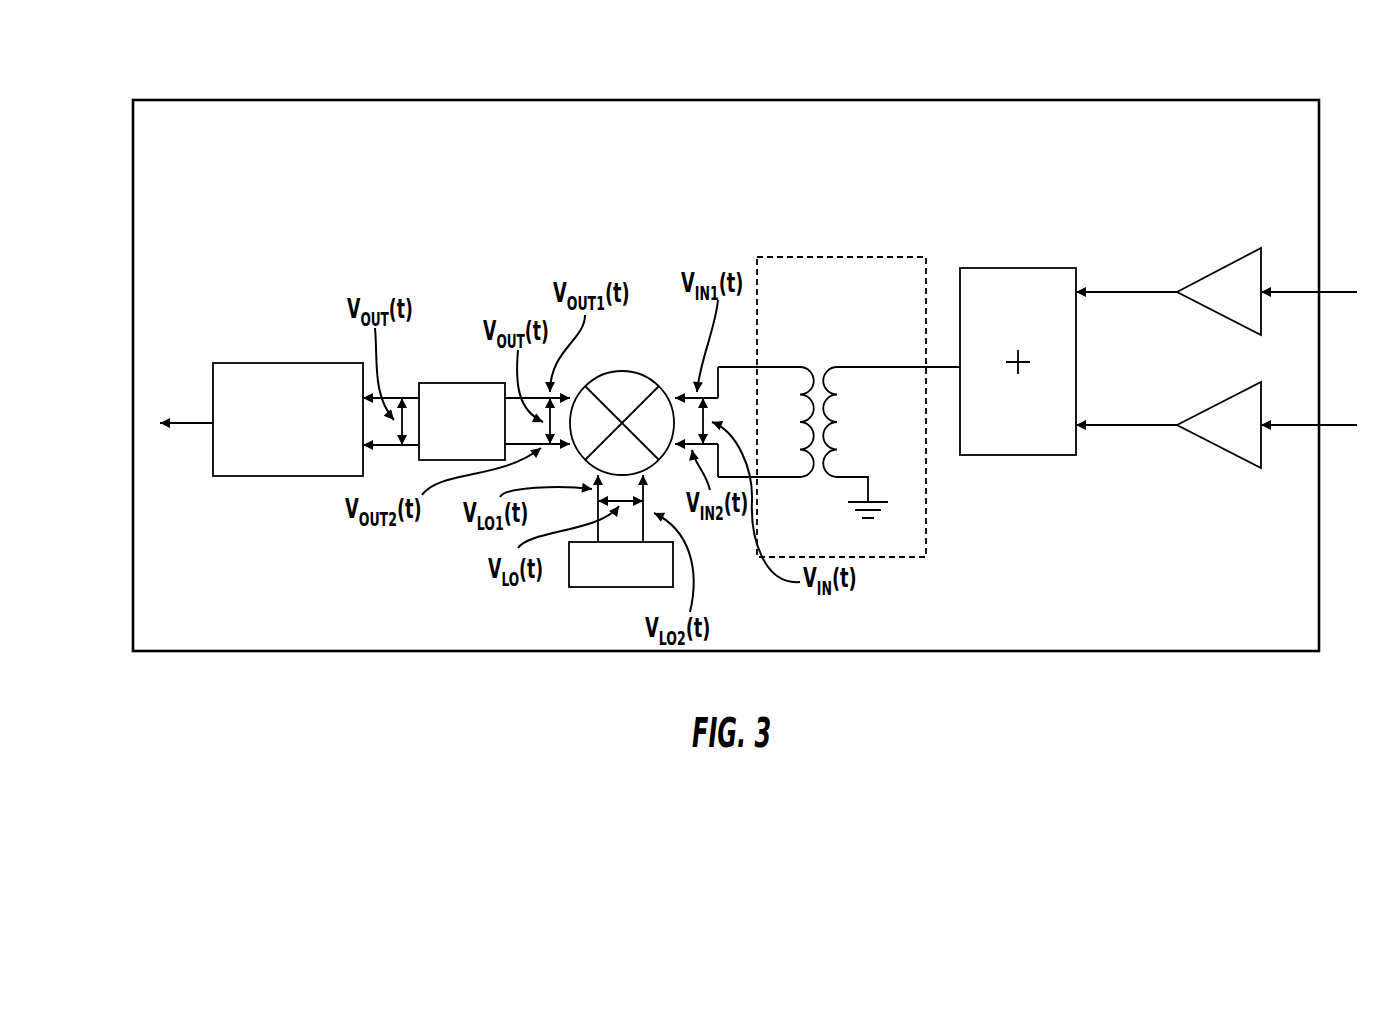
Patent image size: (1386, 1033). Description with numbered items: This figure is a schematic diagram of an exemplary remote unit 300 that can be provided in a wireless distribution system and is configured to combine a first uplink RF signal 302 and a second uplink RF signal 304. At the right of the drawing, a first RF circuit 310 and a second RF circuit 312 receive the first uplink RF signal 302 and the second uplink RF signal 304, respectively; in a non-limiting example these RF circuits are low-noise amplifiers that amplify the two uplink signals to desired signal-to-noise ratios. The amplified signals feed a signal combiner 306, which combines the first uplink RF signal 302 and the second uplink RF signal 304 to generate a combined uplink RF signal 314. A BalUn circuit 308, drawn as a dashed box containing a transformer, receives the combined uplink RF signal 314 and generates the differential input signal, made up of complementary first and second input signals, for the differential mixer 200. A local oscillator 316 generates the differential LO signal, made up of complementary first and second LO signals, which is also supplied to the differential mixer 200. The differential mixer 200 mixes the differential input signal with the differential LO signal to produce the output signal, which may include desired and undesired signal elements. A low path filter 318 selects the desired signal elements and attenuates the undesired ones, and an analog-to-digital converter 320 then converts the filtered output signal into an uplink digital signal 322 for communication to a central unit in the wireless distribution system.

The remote unit 300 is at (195, 100).
The analog-to-digital converter (ADC) 320 is at (278, 363).
The uplink digital signal 322 is at (192, 432).
The low path filter 318 is at (466, 383).
The differential mixer 200 is at (620, 371).
The BalUn circuit 308 is at (832, 257).
The combined uplink RF signal 314 is at (947, 360).
The signal combiner 306 is at (1020, 268).
The first uplink RF signal(s) 302 is at (1118, 286).
The first RF circuit 310 is at (1210, 268).
The second uplink RF signal(s) 304 is at (1113, 431).
The second RF circuit 312 is at (1236, 456).
The local oscillator 316 is at (607, 587).